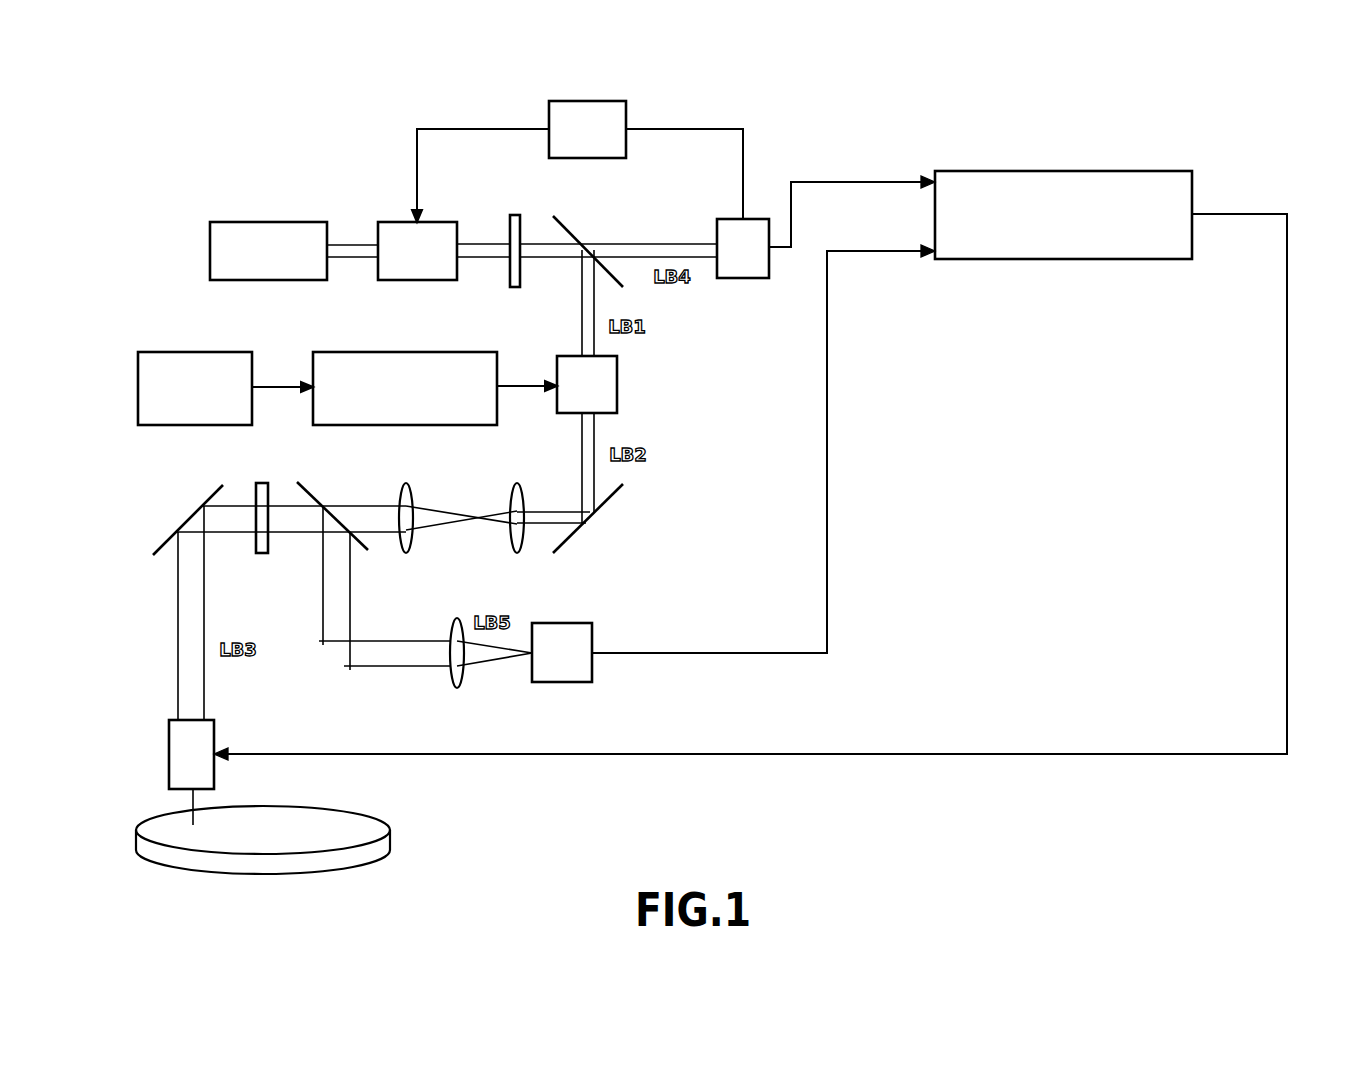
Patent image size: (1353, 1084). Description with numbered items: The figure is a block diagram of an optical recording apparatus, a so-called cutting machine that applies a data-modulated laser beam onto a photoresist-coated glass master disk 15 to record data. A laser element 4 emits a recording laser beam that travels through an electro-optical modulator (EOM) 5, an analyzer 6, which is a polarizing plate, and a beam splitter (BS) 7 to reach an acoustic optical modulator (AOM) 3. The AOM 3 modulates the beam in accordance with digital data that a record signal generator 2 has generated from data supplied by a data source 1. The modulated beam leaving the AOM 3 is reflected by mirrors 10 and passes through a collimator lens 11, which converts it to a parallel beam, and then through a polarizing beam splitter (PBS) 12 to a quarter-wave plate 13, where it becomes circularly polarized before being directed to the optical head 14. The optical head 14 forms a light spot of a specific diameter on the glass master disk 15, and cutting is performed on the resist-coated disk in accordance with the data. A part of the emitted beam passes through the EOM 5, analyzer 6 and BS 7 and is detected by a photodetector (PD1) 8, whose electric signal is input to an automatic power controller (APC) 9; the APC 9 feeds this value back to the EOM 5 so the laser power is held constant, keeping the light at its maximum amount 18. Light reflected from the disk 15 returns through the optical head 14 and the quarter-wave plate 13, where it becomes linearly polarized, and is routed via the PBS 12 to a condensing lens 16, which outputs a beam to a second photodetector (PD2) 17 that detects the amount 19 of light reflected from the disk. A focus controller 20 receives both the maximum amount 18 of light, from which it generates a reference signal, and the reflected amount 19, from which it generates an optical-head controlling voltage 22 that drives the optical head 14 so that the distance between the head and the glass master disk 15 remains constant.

The data source 1 is at (228, 352).
The record signal generator 2 is at (370, 352).
The acoustic optical modulator 3 is at (617, 376).
The laser element 4 is at (228, 222).
The electro-optical modulator 5 is at (430, 222).
The analyzer 6 is at (515, 215).
The beam splitter 7 is at (563, 212).
The photodetector 8 is at (752, 278).
The automatic power controller 9 is at (605, 101).
The mirror 10 is at (205, 503).
The collimator lens 11 is at (508, 532).
The polarizing beam splitter 12 is at (368, 550).
The quarter-wave plate 13 is at (263, 553).
The optical head 14 is at (169, 728).
The glass master disk 15 is at (370, 812).
The condensing lens 16 is at (456, 625).
The photodetector 17 is at (583, 623).
The maximum amount of light 18 is at (905, 180).
The amount of light reflected 19 is at (827, 382).
The focus controller 20 is at (1100, 171).
The control voltage 22 is at (1205, 210).